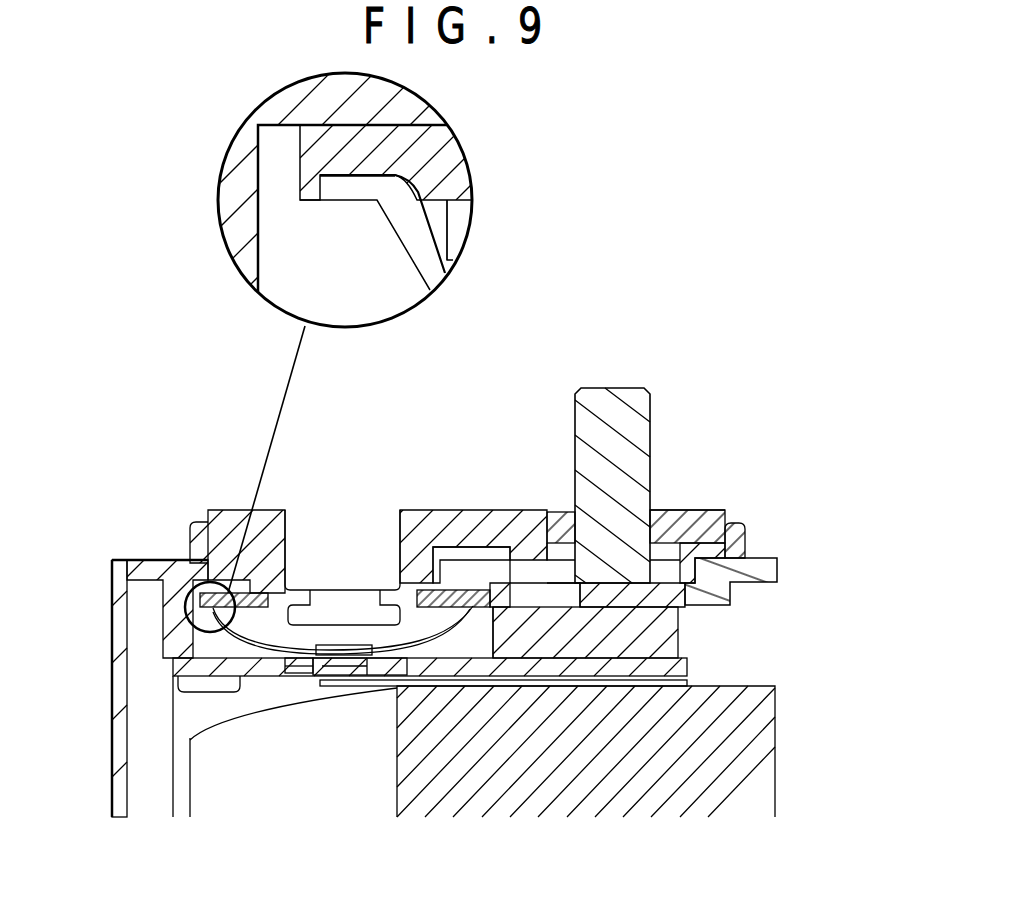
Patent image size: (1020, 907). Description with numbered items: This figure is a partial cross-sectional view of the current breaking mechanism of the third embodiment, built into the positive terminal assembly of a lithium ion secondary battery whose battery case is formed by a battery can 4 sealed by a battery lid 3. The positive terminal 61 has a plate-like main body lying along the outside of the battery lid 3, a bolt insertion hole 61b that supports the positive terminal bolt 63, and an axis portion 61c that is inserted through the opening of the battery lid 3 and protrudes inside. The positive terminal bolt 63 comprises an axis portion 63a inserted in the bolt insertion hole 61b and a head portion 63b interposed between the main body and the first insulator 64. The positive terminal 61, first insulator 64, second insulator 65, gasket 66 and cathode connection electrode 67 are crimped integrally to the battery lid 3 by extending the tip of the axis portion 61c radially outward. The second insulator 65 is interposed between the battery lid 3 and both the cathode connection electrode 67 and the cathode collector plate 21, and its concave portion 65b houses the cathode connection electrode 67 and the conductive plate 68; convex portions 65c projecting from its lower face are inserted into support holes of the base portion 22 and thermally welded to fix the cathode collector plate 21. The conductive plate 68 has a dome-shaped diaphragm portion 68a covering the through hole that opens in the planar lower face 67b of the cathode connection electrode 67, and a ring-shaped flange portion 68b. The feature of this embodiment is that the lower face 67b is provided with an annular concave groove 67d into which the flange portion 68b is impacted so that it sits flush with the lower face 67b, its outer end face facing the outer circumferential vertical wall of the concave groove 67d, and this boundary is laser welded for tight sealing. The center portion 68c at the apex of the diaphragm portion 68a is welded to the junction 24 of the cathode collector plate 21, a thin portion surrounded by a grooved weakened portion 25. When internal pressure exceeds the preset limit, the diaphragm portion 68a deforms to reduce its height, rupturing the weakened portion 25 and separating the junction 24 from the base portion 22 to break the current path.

The battery lid 3 is at (770, 572).
The battery can 4 is at (120, 802).
The cathode collector plate 21 is at (172, 744).
The base portion 22 is at (688, 665).
The junction 24 is at (333, 678).
The weakened portion 25 is at (298, 676).
The positive terminal 61 is at (513, 510).
The bolt insertion hole 61b is at (398, 530).
The axis portion 61c is at (330, 570).
The positive terminal bolt 63 is at (671, 485).
The axis portion 63a is at (652, 430).
The head portion 63b is at (680, 512).
The first insulator 64 is at (747, 540).
The second insulator 65 is at (680, 631).
The concave portion 65b is at (480, 658).
The convex portion 65c is at (192, 685).
The gasket 66 is at (450, 545).
The cathode connection electrode 67 is at (264, 590).
The lower face 67b is at (432, 202).
The concave groove 67d is at (330, 200).
The conductive plate 68 is at (400, 235).
The diaphragm portion 68a is at (332, 177).
The flange portion 68b is at (473, 612).
The center portion 68c is at (358, 658).